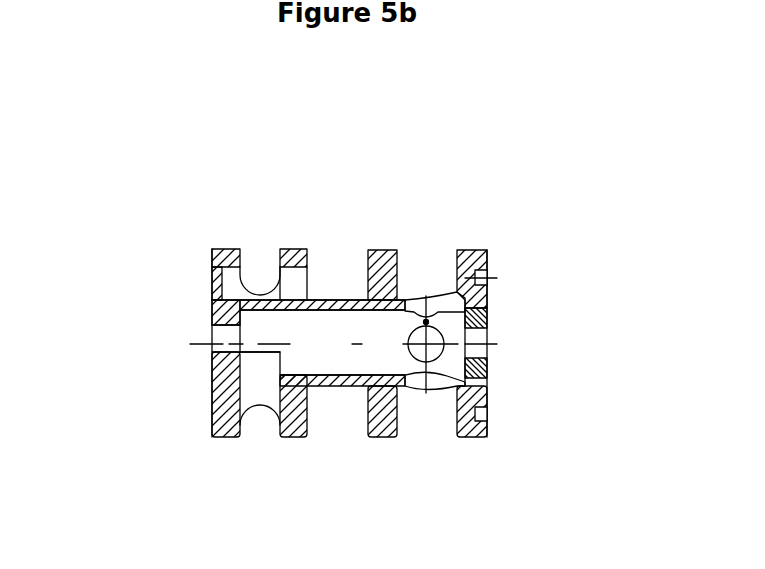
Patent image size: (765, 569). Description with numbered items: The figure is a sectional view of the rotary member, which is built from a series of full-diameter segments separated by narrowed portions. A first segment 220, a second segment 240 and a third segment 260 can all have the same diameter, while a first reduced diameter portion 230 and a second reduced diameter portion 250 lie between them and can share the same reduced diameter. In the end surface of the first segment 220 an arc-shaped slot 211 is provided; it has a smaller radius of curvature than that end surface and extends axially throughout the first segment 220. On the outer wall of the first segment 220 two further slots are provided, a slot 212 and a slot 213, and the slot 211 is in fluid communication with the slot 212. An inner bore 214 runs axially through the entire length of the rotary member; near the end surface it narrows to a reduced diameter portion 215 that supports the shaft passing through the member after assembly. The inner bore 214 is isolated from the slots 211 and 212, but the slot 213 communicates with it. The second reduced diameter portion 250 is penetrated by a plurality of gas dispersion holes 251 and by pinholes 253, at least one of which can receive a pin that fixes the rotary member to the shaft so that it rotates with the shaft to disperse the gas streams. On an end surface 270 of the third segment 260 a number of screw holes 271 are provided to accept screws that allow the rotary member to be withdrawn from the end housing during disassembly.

The slot 211 is at (217, 254).
The slot 212 is at (261, 292).
The slot 213 is at (243, 403).
The inner bore 214 is at (342, 355).
The reduced diameter portion 215 is at (210, 353).
The first segment 220 is at (293, 437).
The first reduced diameter portion 230 is at (332, 303).
The second segment 240 is at (383, 437).
The second reduced diameter portion 250 is at (403, 300).
The gas dispersion holes 251 is at (423, 302).
The pinholes 253 is at (487, 287).
The third segment 260 is at (473, 438).
The end surface 270 is at (490, 252).
The screw holes 271 is at (478, 414).